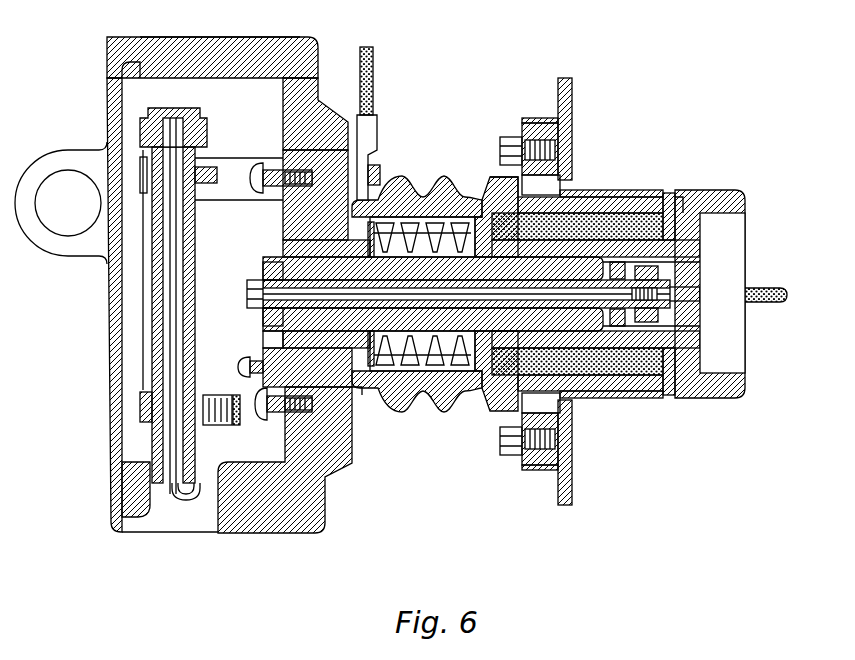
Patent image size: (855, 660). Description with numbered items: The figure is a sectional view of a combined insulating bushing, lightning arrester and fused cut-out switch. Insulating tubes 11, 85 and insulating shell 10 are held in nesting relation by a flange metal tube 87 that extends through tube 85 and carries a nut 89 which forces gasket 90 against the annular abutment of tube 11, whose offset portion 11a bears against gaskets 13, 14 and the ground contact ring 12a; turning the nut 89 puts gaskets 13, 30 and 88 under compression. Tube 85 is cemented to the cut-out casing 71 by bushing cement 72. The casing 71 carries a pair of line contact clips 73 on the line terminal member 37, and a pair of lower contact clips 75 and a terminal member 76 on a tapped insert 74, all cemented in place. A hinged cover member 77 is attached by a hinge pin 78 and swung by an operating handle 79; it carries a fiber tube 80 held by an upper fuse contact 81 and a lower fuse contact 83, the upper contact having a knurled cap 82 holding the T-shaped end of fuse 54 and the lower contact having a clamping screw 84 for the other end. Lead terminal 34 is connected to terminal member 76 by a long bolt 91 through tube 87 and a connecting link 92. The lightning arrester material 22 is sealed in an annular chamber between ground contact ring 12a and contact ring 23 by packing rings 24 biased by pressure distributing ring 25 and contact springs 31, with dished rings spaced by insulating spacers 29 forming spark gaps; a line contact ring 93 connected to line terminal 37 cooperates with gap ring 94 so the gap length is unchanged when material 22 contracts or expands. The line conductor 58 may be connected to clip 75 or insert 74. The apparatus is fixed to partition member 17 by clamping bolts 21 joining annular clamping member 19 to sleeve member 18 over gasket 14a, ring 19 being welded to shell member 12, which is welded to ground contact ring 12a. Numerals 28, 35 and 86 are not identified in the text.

The insulating shell 10 is at (412, 174).
The insulating tube 11 is at (433, 268).
The offset portion 11a is at (718, 193).
The supporting sleeve 12 is at (668, 196).
The ground contact ring 12a is at (668, 400).
The gasket 13 is at (683, 198).
The gasket 14 is at (498, 410).
The gasket 14a is at (548, 295).
The casing member 17 is at (578, 92).
The sleeve member 18 is at (540, 124).
The annular clamping member 19 is at (520, 123).
The clamping bolts 21 is at (500, 140).
The lightning arrester material 22 is at (607, 215).
The contact ring 23 is at (500, 190).
The packing rings 24 is at (484, 204).
The pressure distributing ring 25 is at (474, 392).
The roller bearing 28 is at (415, 340).
The insulating spacers 29 is at (445, 236).
The gasket 30 is at (360, 390).
The contact springs 31 is at (470, 352).
The lead terminal 34 is at (700, 272).
The shaft 35 is at (760, 303).
The line terminal member 37 is at (353, 116).
The fuse 54 is at (186, 501).
The line conductor 58 is at (375, 56).
The cut-out casing 71 is at (228, 46).
The bushing cement 72 is at (283, 214).
The line contact clips 73 is at (240, 160).
The tapped insert 74 is at (322, 478).
The lower contact clips 75 is at (265, 421).
The terminal member 76 is at (252, 360).
The hinged cover member 77 is at (110, 332).
The hinge pin 78 is at (122, 492).
The operating handle 79 is at (66, 257).
The fiber tube 80 is at (192, 266).
The upper fuse contact 81 is at (143, 172).
The knurled cap 82 is at (178, 110).
The lower fuse contact 83 is at (147, 408).
The clamping screw 84 is at (220, 425).
The insulating tube 85 is at (285, 260).
The flange 86 is at (352, 414).
The flange metal tube 87 is at (433, 319).
The gasket 88 is at (276, 338).
The nut 89 is at (652, 314).
The gasket 90 is at (672, 264).
The long bolt 91 is at (249, 296).
The connecting link 92 is at (268, 320).
The line contact ring 93 is at (379, 180).
The gap ring 94 is at (375, 228).